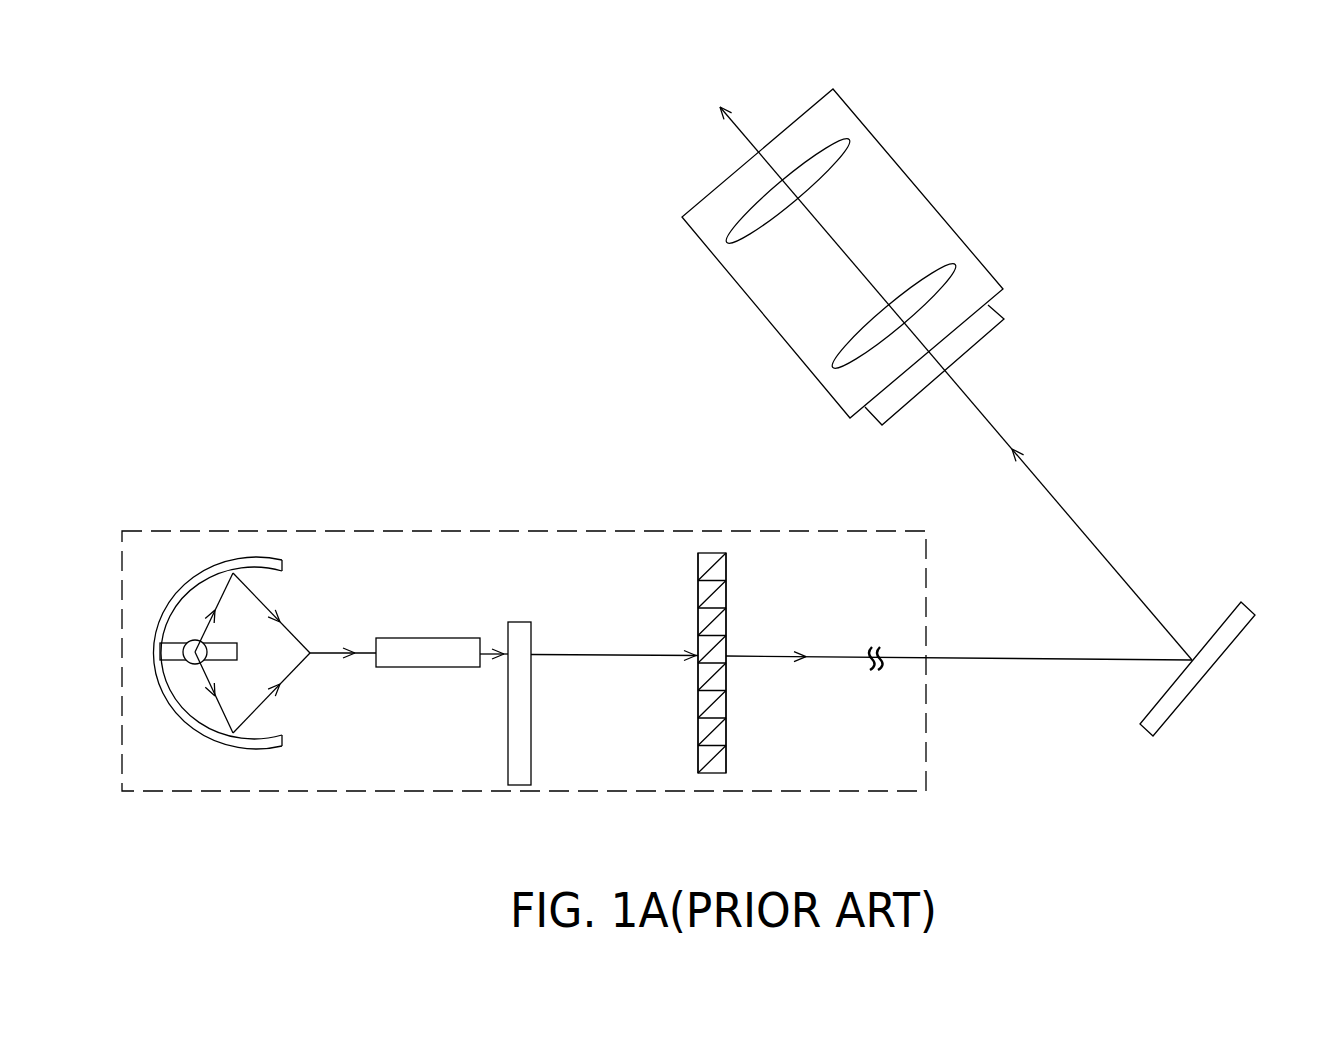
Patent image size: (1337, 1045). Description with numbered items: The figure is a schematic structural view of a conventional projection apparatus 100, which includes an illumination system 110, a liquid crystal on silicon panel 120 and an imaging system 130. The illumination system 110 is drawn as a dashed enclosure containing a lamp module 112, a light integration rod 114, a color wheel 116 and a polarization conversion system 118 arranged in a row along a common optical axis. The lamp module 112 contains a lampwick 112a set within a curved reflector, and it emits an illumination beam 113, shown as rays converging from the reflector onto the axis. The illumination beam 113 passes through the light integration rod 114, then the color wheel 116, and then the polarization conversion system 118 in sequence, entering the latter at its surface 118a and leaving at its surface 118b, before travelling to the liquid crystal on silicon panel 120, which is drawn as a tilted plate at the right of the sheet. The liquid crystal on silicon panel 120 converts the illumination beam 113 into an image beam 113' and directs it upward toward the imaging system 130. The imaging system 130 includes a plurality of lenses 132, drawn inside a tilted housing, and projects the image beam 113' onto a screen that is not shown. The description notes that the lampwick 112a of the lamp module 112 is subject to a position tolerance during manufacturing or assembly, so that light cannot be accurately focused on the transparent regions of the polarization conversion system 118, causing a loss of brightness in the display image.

The projection apparatus 100 is at (1328, 863).
The illumination system 110 is at (900, 801).
The lamp module 112 is at (207, 725).
The lampwick 112a is at (195, 642).
The illumination beam 113 is at (693, 582).
The image beam 113' is at (954, 382).
The light integration rod 114 is at (415, 661).
The color wheel 116 is at (513, 779).
The polarization conversion system 118 is at (715, 769).
The light incident surface 118a is at (697, 705).
The light exit surface 118b is at (728, 705).
The liquid crystal on silicon panel 120 is at (1195, 688).
The imaging system 130 is at (975, 250).
The lenses 132 is at (850, 142).